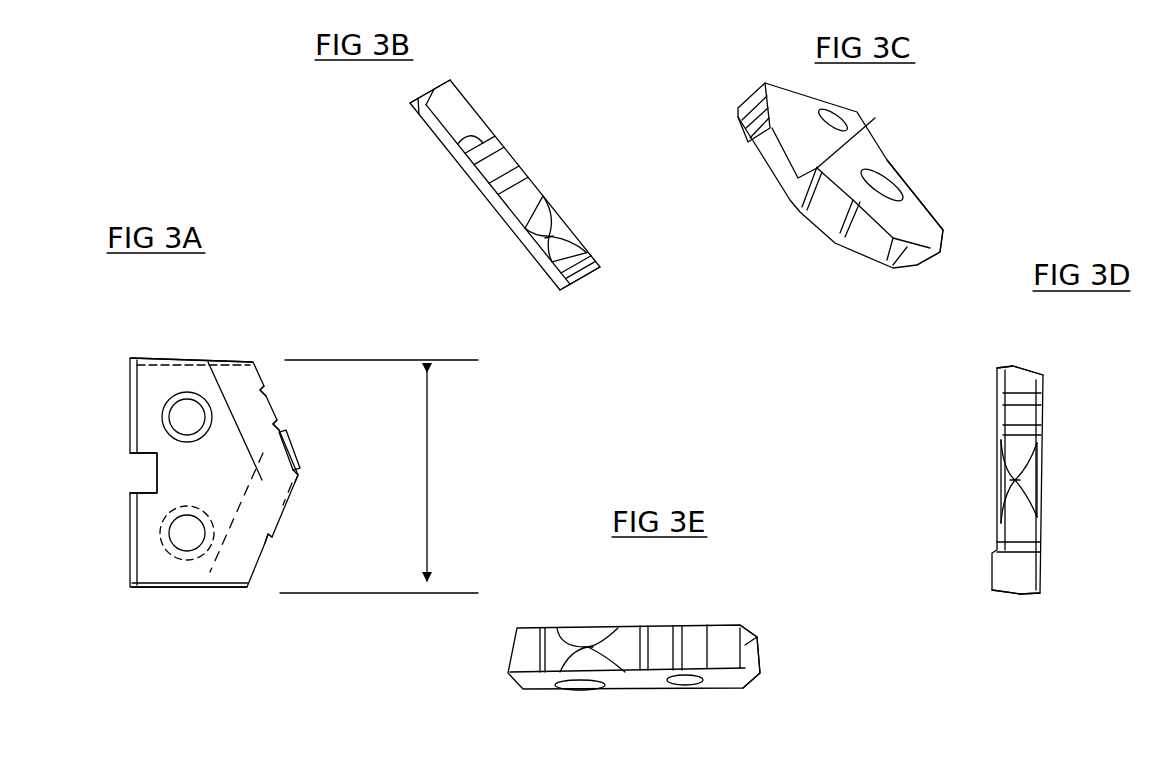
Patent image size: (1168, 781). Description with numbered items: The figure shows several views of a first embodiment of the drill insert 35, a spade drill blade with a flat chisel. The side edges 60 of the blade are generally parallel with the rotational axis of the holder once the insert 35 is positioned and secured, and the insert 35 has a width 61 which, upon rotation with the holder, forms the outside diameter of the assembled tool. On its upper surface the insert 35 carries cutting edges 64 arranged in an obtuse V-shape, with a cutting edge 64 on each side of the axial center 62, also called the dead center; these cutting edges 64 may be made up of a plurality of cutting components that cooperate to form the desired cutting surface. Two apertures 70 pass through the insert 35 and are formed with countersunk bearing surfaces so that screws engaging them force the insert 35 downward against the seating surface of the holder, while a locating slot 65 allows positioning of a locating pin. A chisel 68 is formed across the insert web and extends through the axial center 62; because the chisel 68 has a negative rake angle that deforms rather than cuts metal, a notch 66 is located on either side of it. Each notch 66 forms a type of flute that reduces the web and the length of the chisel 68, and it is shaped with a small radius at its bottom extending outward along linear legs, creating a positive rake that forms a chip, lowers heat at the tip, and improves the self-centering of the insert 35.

In FIG. 3A, the drill insert 35 is at (252, 648).
In FIG. 3B, the drill insert 35 is at (548, 135).
In FIG. 3C, the drill insert 35 is at (962, 152).
In FIG. 3D, the drill insert 35 is at (1062, 398).
In FIG. 3E, the drill insert 35 is at (715, 710).
In FIG. 3A, the side edges 60 is at (190, 357).
In FIG. 3B, the side edges 60 is at (427, 110).
In FIG. 3C, the side edges 60 is at (898, 240).
In FIG. 3D, the side edges 60 is at (1017, 366).
In FIG. 3E, the side edges 60 is at (747, 673).
In FIG. 3A, the width 61 is at (379, 476).
In FIG. 3A, the axial center 62 is at (300, 476).
In FIG. 3A, the cutting edges 64 is at (270, 405).
In FIG. 3B, the cutting edges 64 is at (497, 202).
In FIG. 3C, the cutting edges 64 is at (745, 130).
In FIG. 3D, the cutting edges 64 is at (998, 410).
In FIG. 3E, the cutting edges 64 is at (662, 625).
In FIG. 3A, the locating slot 65 is at (146, 478).
In FIG. 3A, the notch 66 is at (290, 452).
In FIG. 3B, the notch 66 is at (557, 232).
In FIG. 3D, the notch 66 is at (1007, 480).
In FIG. 3E, the notch 66 is at (588, 630).
In FIG. 3B, the chisel 68 is at (558, 283).
In FIG. 3D, the chisel 68 is at (1040, 458).
In FIG. 3E, the chisel 68 is at (553, 628).
In FIG. 3A, the apertures 70 is at (183, 418).